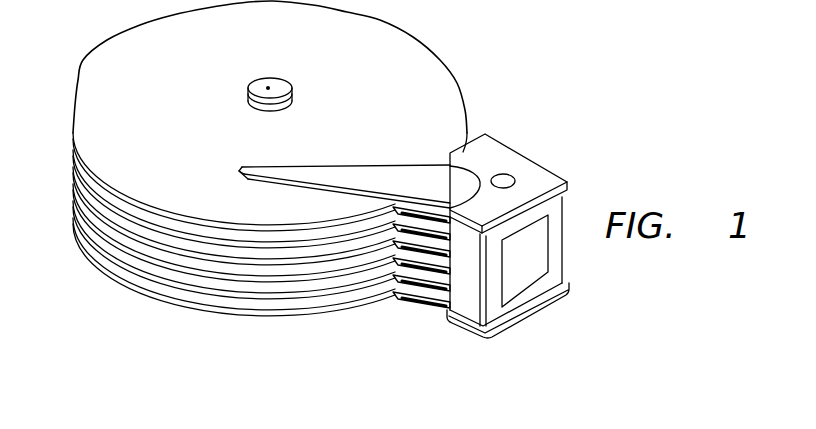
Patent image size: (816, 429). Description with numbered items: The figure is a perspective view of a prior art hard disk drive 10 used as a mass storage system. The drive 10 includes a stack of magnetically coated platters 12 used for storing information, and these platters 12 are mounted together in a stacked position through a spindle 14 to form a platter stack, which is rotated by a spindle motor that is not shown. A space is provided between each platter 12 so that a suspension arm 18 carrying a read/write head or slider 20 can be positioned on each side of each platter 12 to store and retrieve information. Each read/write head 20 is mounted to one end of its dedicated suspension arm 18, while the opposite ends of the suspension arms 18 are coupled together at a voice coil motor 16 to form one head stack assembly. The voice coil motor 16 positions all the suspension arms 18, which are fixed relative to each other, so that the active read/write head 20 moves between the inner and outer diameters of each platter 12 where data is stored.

The drive 10 is at (512, 53).
The magnetically coated platters 12 is at (242, 158).
The spindle 14 is at (265, 80).
The voice coil motor 16 is at (533, 172).
The suspension arm 18 is at (363, 175).
The read/write head or slider 20 is at (236, 179).